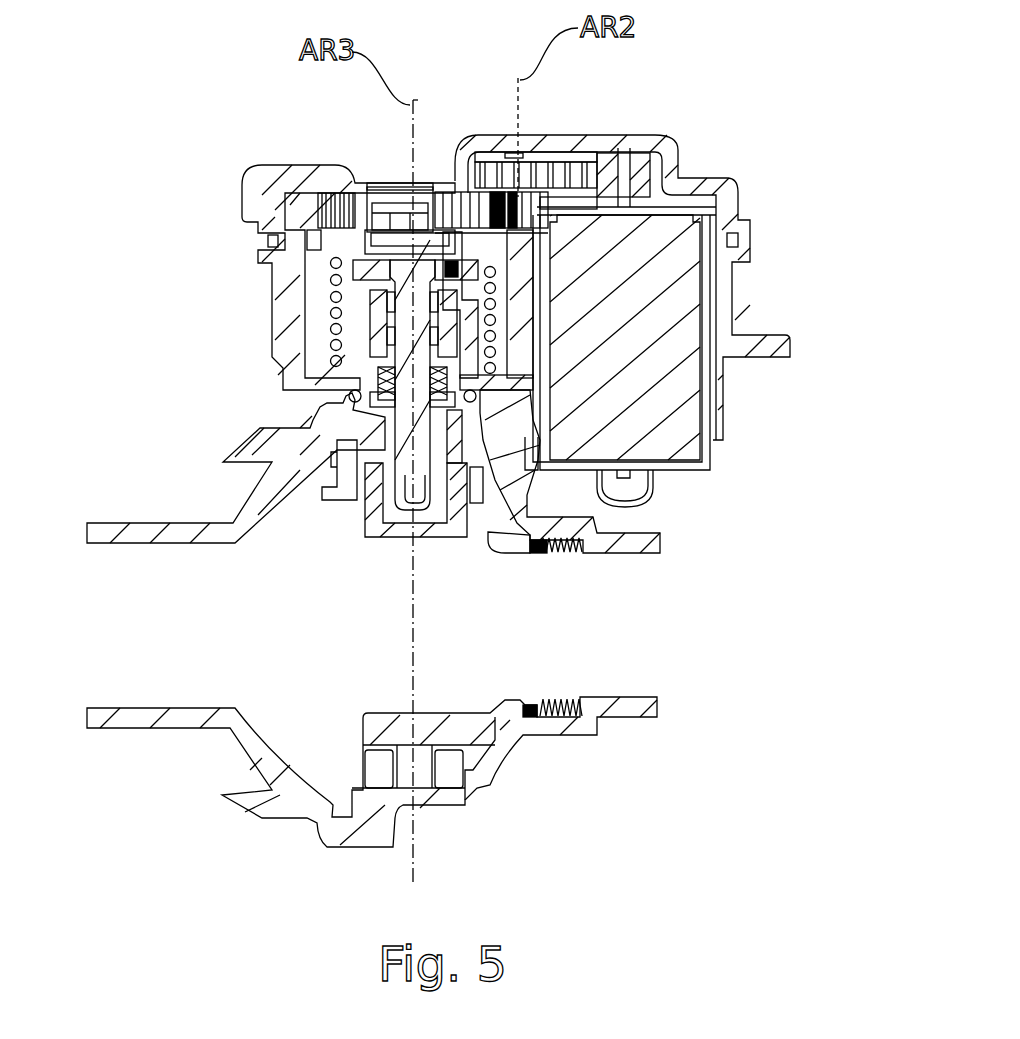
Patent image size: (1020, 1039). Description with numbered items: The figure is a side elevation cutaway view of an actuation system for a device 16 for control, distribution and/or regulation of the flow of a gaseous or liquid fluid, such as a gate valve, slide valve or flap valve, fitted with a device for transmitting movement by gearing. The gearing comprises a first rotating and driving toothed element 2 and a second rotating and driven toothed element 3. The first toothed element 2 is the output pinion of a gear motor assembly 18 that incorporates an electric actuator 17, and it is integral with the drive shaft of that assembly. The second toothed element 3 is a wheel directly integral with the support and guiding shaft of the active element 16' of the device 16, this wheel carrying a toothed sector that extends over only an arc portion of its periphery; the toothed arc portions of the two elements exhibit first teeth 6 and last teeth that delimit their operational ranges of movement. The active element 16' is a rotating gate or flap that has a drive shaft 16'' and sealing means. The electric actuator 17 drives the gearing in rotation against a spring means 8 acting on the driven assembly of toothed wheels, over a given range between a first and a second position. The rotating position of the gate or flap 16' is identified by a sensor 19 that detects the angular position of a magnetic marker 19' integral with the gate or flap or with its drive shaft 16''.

The first toothed element 2 is at (522, 217).
The second toothed element 3 is at (460, 190).
The first teeth 6 is at (191, 765).
The spring means 8 is at (332, 333).
The device for control, distribution and/or regulation 16 is at (279, 277).
The active element 16' is at (532, 583).
The drive shaft 16'' is at (321, 333).
The electric actuator 17 is at (667, 423).
The gear motor assembly 18 is at (591, 152).
The sensor 19 is at (375, 168).
The magnetic marker 19' is at (309, 210).